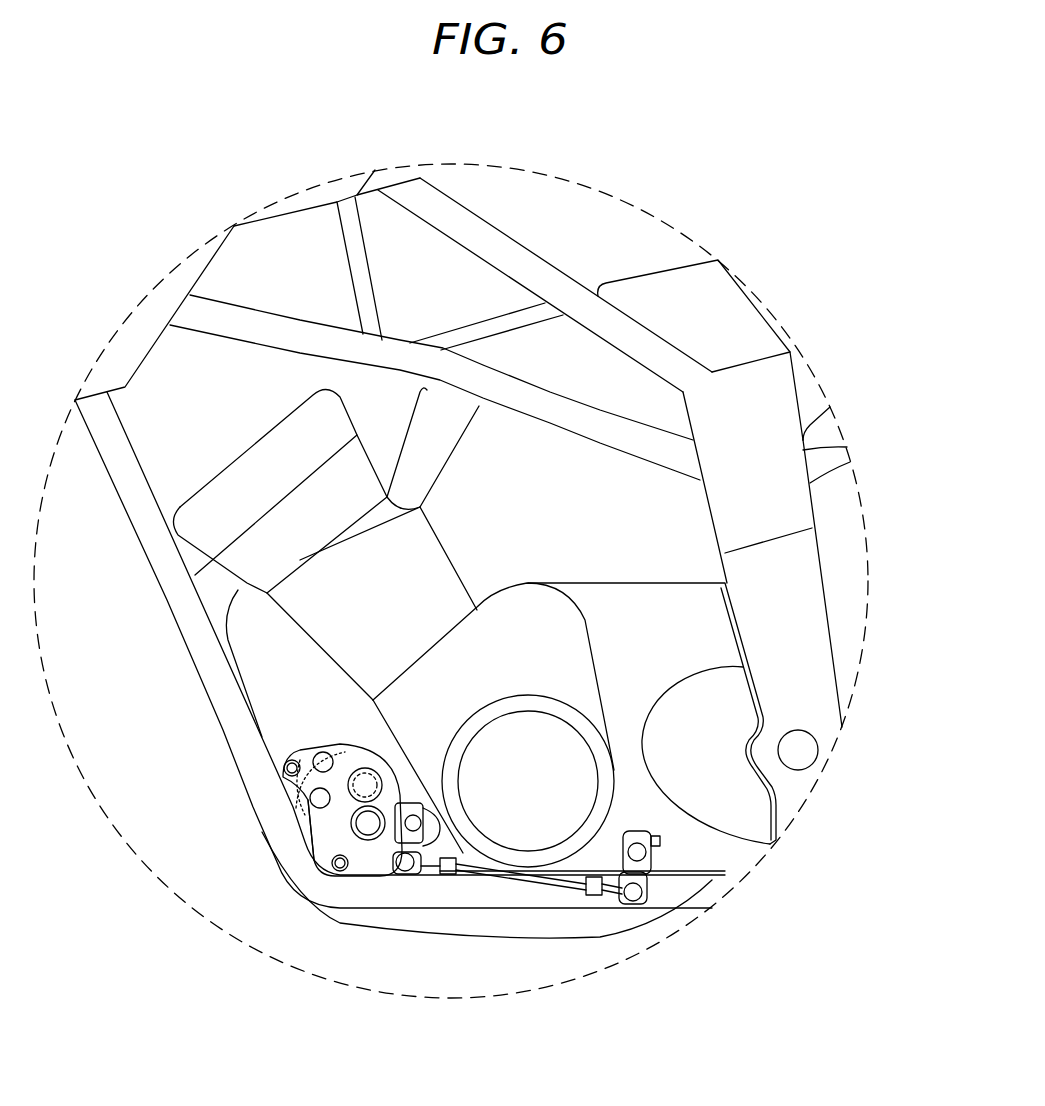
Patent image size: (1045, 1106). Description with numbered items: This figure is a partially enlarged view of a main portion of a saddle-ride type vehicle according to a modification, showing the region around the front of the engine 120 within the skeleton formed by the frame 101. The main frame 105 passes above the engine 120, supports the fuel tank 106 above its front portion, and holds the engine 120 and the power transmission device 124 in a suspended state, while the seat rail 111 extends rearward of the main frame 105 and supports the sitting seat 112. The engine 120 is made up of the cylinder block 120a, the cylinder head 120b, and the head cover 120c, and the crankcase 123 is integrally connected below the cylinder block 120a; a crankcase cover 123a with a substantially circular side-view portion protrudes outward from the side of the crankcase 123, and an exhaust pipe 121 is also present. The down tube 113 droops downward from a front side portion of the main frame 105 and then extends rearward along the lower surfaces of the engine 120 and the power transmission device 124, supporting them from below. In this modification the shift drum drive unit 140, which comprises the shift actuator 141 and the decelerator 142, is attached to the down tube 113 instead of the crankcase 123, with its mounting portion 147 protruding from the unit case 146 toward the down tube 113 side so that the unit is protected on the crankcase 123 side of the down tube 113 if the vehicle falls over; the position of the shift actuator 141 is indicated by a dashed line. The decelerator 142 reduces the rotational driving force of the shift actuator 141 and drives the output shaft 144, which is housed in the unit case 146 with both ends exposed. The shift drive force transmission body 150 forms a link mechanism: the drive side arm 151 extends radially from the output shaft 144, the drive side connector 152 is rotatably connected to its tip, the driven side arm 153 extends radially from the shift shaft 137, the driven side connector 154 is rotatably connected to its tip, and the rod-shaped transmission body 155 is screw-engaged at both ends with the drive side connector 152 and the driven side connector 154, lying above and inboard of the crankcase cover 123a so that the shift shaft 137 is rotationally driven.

The frame 101 is at (324, 316).
The main frame 105 is at (492, 268).
The fuel tank 106 is at (582, 186).
The seat rail 111 is at (780, 350).
The sitting seat 112 is at (733, 308).
The down tube 113 is at (162, 593).
The engine 120 is at (358, 618).
The cylinder block 120a is at (448, 573).
The cylinder head 120b is at (370, 470).
The head cover 120c is at (275, 428).
The exhaust pipe 121 is at (247, 583).
The crankcase 123 is at (422, 656).
The crankcase cover 123a is at (528, 693).
The power transmission device 124 is at (666, 583).
The shift shaft 137 is at (642, 837).
The shift drum drive unit 140 is at (313, 822).
The shift actuator 141 is at (290, 792).
The decelerator 142 is at (333, 740).
The output shaft 144 is at (423, 793).
The unit case 146 is at (313, 853).
The mounting portion 147 is at (283, 750).
The shift drive force transmission body 150 is at (488, 882).
The drive side arm 151 is at (361, 877).
The drive side connector 152 is at (425, 876).
The driven side arm 153 is at (650, 884).
The driven side connector 154 is at (598, 898).
The transmission body 155 is at (552, 892).